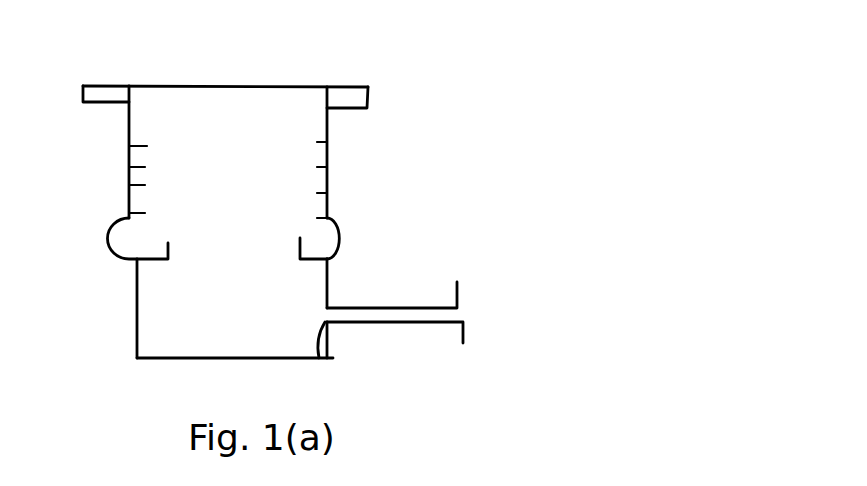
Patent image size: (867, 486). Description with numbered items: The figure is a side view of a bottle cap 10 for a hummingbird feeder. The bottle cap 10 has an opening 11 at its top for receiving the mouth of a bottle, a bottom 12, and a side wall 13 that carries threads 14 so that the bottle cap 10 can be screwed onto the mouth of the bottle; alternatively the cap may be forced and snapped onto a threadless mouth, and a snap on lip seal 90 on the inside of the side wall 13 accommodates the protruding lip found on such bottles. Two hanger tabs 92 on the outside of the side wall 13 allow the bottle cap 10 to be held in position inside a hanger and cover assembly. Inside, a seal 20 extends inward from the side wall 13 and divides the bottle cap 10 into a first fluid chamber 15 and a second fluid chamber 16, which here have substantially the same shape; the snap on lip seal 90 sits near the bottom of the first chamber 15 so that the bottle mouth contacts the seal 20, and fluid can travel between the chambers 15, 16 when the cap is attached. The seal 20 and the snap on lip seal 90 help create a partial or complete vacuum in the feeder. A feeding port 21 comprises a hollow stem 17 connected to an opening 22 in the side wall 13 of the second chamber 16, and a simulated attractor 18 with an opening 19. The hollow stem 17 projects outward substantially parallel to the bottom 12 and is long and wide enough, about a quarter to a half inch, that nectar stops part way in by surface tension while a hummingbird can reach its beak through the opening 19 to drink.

The bottle cap 10 is at (450, 180).
The opening 11 is at (230, 87).
The bottom 12 is at (190, 360).
The side wall 13 is at (129, 148).
The threads 14 is at (330, 158).
The first fluid chamber 15 is at (195, 147).
The second fluid chamber 16 is at (196, 310).
The hollow stem 17 is at (392, 327).
The simulated attractor 18 is at (460, 290).
The opening 19 is at (465, 309).
The seal 20 is at (300, 259).
The feeding port 21 is at (388, 283).
The opening 22 is at (313, 362).
The snap on lip seal 90 is at (338, 236).
The hanger tabs 92 is at (372, 88).